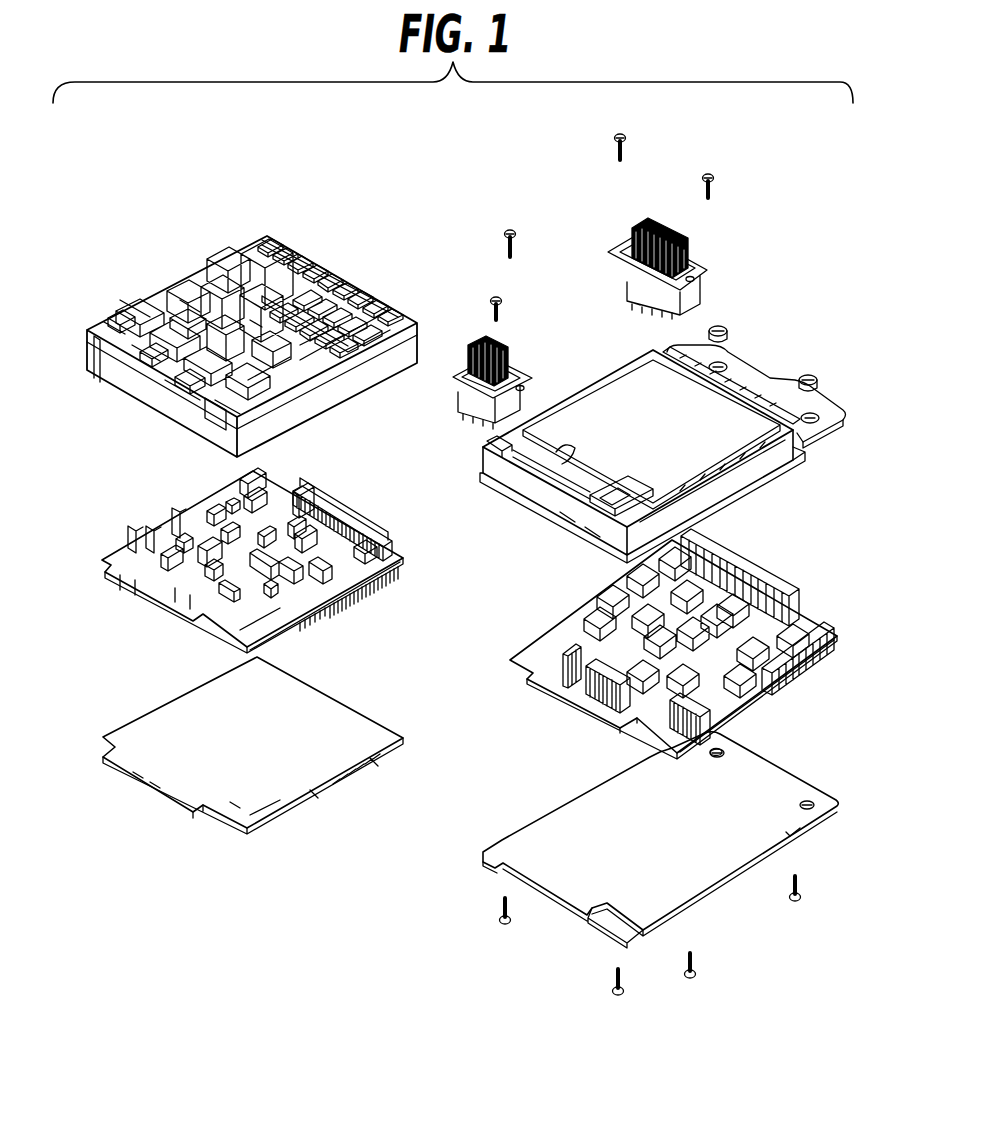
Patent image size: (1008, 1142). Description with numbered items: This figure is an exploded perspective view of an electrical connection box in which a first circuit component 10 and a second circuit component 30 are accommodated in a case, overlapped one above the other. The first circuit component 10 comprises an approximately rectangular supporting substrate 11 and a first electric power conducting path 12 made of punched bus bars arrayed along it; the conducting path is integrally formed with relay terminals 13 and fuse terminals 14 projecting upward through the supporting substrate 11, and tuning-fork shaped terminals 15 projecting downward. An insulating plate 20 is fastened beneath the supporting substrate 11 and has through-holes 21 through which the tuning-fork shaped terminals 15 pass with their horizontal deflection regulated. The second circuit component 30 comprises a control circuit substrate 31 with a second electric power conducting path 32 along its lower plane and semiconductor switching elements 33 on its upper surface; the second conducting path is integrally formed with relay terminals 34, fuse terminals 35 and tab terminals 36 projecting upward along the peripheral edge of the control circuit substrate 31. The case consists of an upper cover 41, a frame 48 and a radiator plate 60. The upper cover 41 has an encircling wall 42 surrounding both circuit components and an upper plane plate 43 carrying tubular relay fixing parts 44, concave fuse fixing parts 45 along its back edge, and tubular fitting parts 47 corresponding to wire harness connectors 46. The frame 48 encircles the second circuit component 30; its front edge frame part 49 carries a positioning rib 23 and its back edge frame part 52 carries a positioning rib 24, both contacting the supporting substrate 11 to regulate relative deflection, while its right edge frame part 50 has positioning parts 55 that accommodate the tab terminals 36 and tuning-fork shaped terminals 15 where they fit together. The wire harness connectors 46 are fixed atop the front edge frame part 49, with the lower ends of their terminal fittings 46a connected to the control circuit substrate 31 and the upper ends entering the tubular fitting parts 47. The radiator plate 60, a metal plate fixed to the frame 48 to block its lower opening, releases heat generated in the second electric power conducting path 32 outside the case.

The first circuit component 10 is at (357, 497).
The supporting substrate 11 is at (152, 542).
The first electric power conducting path 12 is at (367, 612).
The relay terminals 13 is at (176, 515).
The fuse terminals 14 is at (362, 528).
The tuning-fork shaped terminals 15 is at (390, 592).
The insulating plate 20 is at (232, 800).
The through-holes 21 is at (302, 775).
The positioning rib 23 is at (560, 468).
The positioning rib 24 is at (745, 428).
The second circuit component 30 is at (802, 562).
The control circuit substrate 31 is at (768, 632).
The second electric power conducting path 32 is at (820, 688).
The semiconductor switching element 33 is at (610, 600).
The relay terminals 34 is at (574, 664).
The fuse terminals 35 is at (706, 546).
The tab terminals 36 is at (838, 653).
The upper cover 41 is at (424, 244).
The encircling wall 42 is at (322, 403).
The upper plane plate 43 is at (357, 300).
The relay fixing parts 44 is at (143, 297).
The fuse fixing parts 45 is at (328, 283).
The wire harness connector 46 is at (702, 265).
The terminal fitting 46a is at (680, 237).
The tubular fitting part 47 is at (100, 378).
The frame 48 is at (802, 297).
The front edge frame part 49 is at (530, 482).
The right edge frame part 50 is at (740, 480).
The back edge frame part 52 is at (742, 376).
The positioning parts 55 is at (790, 430).
The radiator plate 60 is at (722, 870).